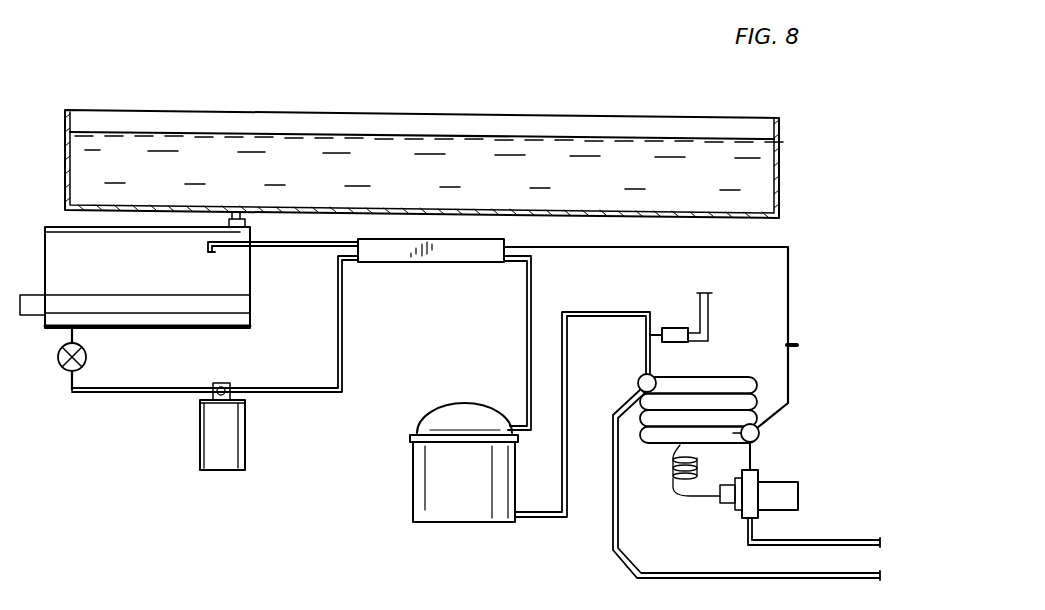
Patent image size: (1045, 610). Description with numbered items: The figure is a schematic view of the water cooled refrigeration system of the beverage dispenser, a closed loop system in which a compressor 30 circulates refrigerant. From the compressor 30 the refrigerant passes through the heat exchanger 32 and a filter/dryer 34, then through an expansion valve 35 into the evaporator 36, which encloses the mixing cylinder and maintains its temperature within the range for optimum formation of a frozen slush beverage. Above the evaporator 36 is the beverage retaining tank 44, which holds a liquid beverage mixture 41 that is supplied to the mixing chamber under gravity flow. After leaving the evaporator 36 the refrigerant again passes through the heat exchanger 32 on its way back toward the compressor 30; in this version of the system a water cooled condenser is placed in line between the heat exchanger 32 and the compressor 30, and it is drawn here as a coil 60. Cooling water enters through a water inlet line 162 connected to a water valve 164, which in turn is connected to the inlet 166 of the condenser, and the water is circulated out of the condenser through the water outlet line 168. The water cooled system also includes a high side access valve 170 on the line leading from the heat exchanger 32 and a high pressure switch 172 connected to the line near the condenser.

The compressor 30 is at (457, 515).
The heat exchanger 32 is at (450, 262).
The filter/dryer 34 is at (200, 458).
The expansion valve 35 is at (63, 370).
The evaporator 36 is at (170, 313).
The liquid beverage mixture 41 is at (354, 138).
The beverage retaining tank 44 is at (66, 133).
The coil 60 is at (735, 378).
The water inlet line 162 is at (827, 540).
The water valve 164 is at (775, 485).
The inlet 166 is at (762, 431).
The water outlet line 168 is at (618, 535).
The high side access valve 170 is at (797, 345).
The high pressure switch 172 is at (670, 327).